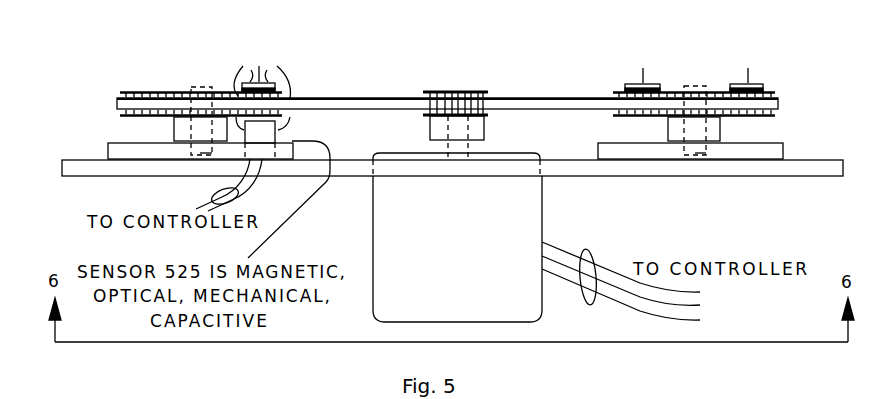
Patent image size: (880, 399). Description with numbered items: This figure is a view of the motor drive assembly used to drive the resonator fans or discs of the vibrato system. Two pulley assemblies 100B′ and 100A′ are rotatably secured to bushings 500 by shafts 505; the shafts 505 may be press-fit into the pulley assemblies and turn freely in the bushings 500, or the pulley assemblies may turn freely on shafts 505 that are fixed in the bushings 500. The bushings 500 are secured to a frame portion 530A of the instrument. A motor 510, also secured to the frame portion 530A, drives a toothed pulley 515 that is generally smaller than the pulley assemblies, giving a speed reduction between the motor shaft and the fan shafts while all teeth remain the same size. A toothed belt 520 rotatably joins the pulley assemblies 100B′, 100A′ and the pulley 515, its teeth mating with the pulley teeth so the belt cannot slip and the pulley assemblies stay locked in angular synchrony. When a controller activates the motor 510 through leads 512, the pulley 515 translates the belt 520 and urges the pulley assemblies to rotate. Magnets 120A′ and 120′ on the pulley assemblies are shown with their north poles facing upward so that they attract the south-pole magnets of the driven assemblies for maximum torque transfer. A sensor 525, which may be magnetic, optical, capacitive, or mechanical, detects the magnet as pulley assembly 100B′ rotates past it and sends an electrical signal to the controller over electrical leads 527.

The pulley assembly 100B′ is at (118, 92).
The pulley assembly 100A′ is at (615, 92).
The shaft 505 is at (202, 87).
The magnet 120A′ is at (262, 83).
The magnet 120′ is at (633, 83).
The toothed belt 520 is at (363, 98).
The toothed pulley 515 is at (458, 91).
The bushing 500 is at (108, 143).
The sensor 525 is at (283, 133).
The electrical leads 527 is at (212, 194).
The frame portion 530A is at (80, 177).
The motor 510 is at (373, 234).
The leads 512 is at (594, 258).